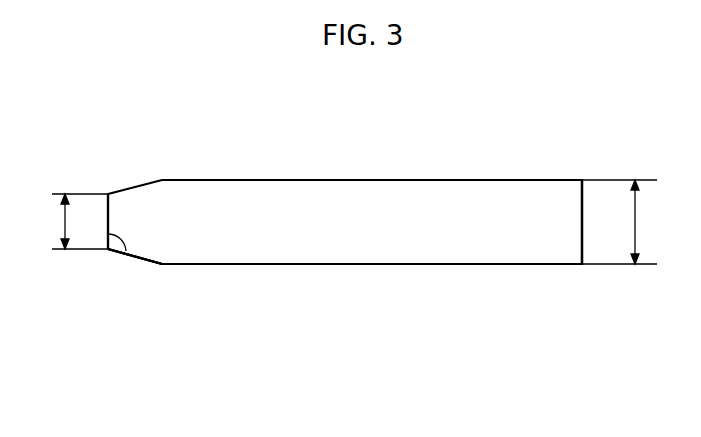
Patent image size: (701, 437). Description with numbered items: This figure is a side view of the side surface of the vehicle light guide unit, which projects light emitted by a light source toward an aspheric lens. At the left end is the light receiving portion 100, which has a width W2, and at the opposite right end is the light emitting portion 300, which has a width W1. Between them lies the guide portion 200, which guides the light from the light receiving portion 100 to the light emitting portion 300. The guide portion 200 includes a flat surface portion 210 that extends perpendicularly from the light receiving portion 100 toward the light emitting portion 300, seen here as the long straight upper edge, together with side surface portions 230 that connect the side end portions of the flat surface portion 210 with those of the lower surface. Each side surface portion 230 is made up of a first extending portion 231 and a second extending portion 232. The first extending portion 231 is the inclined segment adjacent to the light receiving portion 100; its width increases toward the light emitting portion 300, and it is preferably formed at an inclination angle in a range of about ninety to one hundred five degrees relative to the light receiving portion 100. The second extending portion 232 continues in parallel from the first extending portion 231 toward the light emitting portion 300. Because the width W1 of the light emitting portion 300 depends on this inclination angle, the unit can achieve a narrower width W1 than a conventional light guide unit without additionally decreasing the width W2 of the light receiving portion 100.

The light receiving portion 100 is at (101, 227).
The guide portion 200 is at (351, 173).
The flat surface portion 210 is at (455, 203).
The side surface portion 230 is at (390, 350).
The first extending portion 231 is at (137, 258).
The second extending portion 232 is at (432, 265).
The light emitting portion 300 is at (588, 227).
The width of the light emitting portion W1 is at (627, 222).
The width of the light receiving portion W2 is at (67, 221).